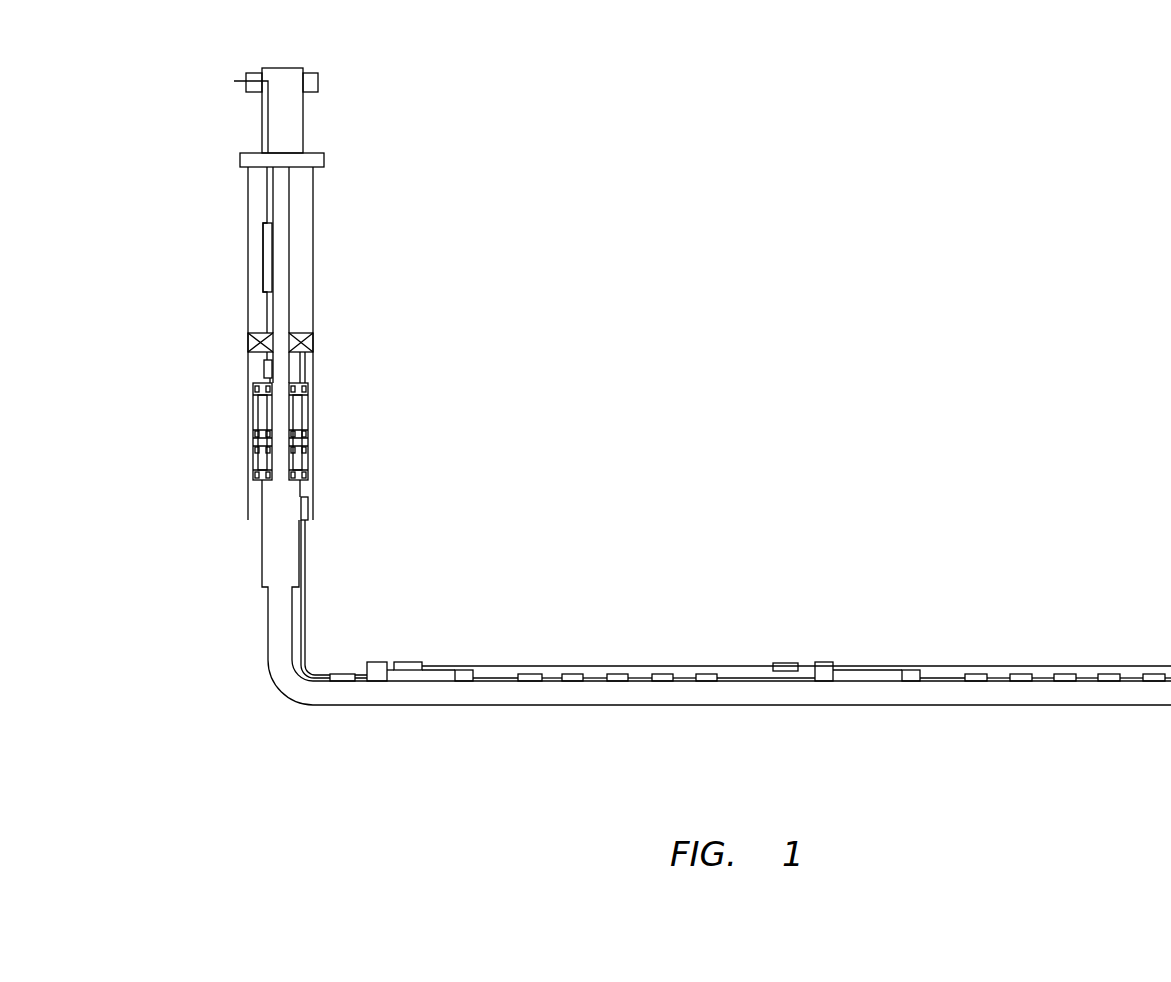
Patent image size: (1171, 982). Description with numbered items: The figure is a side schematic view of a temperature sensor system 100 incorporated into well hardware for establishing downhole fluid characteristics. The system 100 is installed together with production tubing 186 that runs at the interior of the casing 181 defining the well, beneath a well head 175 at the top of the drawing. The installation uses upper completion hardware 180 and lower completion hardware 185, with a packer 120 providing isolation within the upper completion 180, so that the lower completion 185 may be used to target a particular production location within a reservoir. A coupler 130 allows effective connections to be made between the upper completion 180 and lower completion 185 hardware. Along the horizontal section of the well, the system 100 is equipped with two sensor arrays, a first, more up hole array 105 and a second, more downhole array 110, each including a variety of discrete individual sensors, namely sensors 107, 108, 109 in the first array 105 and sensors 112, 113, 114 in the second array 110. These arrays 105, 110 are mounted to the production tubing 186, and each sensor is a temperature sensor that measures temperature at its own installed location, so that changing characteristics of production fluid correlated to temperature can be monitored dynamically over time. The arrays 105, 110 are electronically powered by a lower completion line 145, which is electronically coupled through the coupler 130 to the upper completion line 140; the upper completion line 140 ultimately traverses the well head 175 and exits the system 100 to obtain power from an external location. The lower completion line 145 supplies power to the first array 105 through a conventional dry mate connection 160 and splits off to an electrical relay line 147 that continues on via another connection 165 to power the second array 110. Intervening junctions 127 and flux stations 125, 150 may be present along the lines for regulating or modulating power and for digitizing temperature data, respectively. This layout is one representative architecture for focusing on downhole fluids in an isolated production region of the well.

The temperature sensor system 100 is at (505, 766).
The first sensor array 105 is at (500, 654).
The sensor 107 is at (533, 681).
The sensor 108 is at (572, 674).
The sensor 109 is at (662, 681).
The second sensor array 110 is at (998, 656).
The sensor 112 is at (1018, 681).
The sensor 113 is at (1067, 673).
The sensor 114 is at (1105, 681).
The packer 120 is at (258, 335).
The flux station 125 is at (400, 672).
The junction 127 is at (380, 683).
The coupler 130 is at (305, 383).
The upper completion line 140 is at (266, 313).
The lower completion line 145 is at (306, 617).
The electrical relay line 147 is at (740, 665).
The flux station 150 is at (858, 681).
The dry mate connection 160 is at (340, 672).
The connection 165 is at (790, 663).
The well head 175 is at (282, 82).
The upper completion hardware 180 is at (231, 423).
The casing 181 is at (247, 203).
The lower completion hardware 185 is at (257, 671).
The production tubing 186 is at (292, 222).